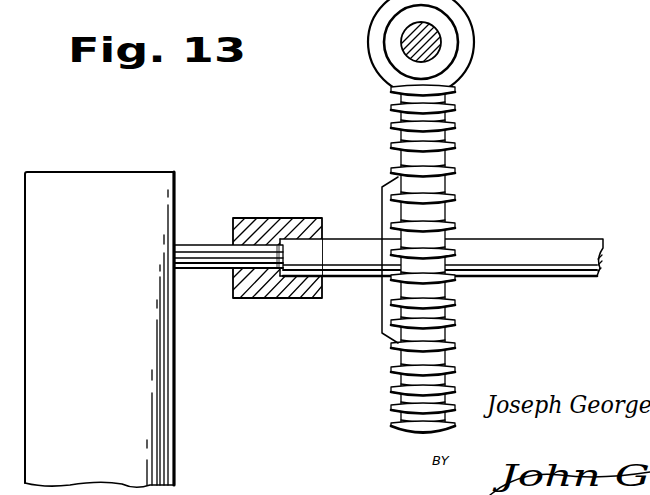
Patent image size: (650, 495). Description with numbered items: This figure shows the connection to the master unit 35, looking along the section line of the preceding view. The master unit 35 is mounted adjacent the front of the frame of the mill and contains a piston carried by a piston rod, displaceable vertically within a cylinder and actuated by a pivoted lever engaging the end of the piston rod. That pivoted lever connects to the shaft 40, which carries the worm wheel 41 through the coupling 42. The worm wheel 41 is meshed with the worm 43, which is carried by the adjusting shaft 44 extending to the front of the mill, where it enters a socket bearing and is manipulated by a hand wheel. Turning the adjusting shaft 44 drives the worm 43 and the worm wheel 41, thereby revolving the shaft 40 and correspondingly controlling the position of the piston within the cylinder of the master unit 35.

The master unit 35 is at (99, 259).
The shaft 40 is at (528, 251).
The worm wheel 41 is at (447, 215).
The coupling 42 is at (270, 218).
The worm 43 is at (458, 42).
The adjusting shaft 44 is at (403, 50).